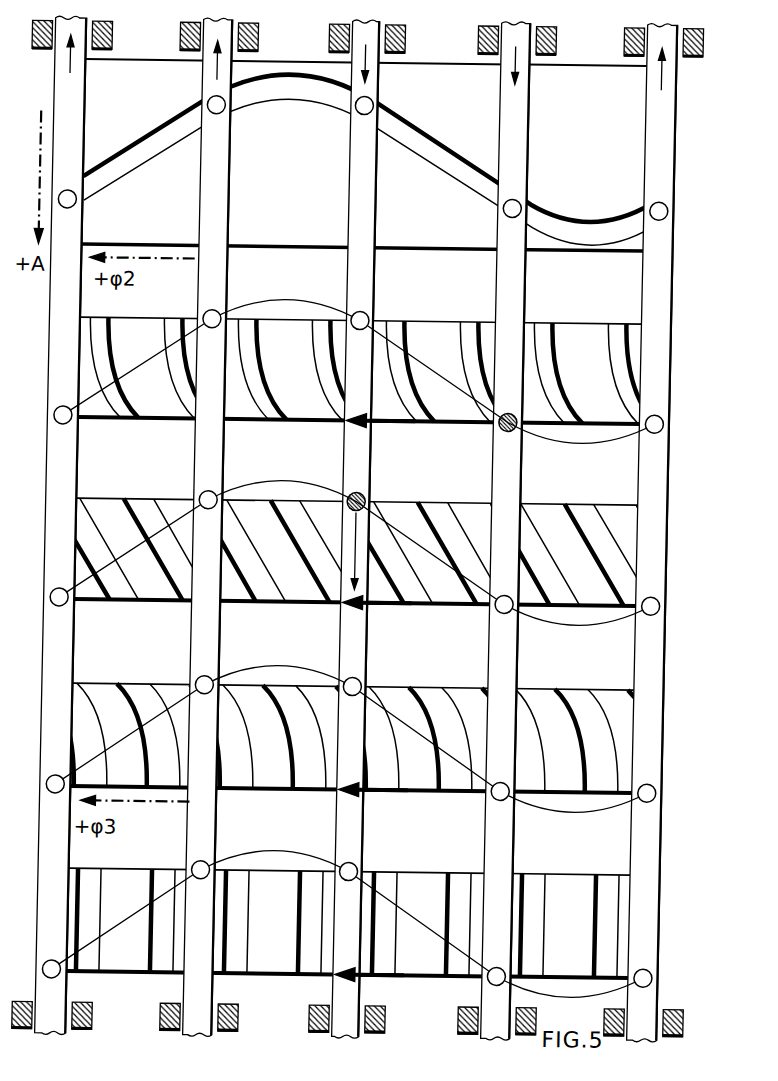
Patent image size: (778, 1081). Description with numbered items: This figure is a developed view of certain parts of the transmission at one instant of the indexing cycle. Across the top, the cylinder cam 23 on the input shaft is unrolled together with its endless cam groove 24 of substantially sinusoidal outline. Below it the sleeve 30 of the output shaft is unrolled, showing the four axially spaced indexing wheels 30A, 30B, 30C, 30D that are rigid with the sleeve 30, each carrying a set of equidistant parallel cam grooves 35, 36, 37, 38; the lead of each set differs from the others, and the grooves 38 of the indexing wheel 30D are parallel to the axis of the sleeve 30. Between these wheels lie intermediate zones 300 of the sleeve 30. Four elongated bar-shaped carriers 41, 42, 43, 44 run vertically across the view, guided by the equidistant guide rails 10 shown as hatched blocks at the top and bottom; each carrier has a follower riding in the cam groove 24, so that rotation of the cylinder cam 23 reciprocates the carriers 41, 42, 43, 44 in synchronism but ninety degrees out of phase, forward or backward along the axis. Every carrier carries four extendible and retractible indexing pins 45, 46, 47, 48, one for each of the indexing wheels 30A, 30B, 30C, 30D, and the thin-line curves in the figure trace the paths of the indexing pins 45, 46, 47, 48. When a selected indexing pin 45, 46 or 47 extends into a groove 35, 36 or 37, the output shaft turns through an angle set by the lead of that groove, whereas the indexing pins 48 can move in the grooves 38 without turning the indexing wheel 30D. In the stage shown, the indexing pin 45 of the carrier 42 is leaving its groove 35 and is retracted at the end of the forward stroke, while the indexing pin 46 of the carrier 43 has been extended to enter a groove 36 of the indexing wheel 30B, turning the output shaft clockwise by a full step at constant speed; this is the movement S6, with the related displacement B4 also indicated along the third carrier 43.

The guide rails 10 is at (331, 36).
The cylinder cam 23 is at (572, 181).
The endless cam groove 24 is at (433, 146).
The sleeve 30 is at (122, 659).
The indexing wheel 30A is at (646, 354).
The indexing wheel 30B is at (645, 570).
The indexing wheel 30C is at (641, 734).
The indexing wheel 30D is at (643, 925).
The intermediate zones 300 is at (666, 268).
The cam grooves 35 is at (620, 333).
The cam grooves 36 is at (593, 518).
The cam grooves 37 is at (595, 698).
The cam grooves 38 is at (626, 887).
The carrier 41 is at (80, 114).
The carrier 42 is at (521, 118).
The carrier 43 is at (382, 182).
The carrier 44 is at (226, 184).
The indexing pin 45 is at (359, 365).
The indexing pin 46 is at (356, 548).
The indexing pin 47 is at (352, 733).
The indexing pin 48 is at (348, 919).
The displacement B4 is at (362, 582).
The movement S6 is at (400, 713).